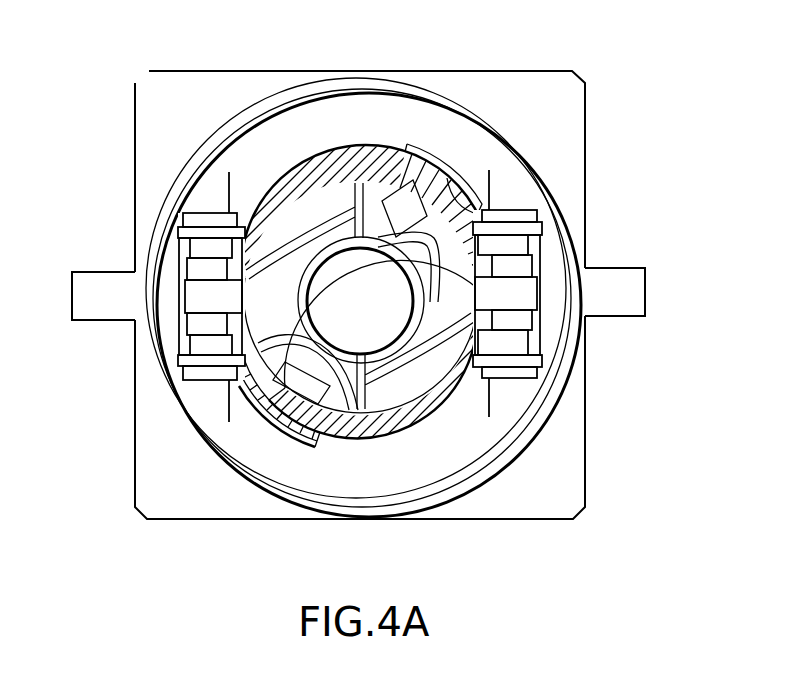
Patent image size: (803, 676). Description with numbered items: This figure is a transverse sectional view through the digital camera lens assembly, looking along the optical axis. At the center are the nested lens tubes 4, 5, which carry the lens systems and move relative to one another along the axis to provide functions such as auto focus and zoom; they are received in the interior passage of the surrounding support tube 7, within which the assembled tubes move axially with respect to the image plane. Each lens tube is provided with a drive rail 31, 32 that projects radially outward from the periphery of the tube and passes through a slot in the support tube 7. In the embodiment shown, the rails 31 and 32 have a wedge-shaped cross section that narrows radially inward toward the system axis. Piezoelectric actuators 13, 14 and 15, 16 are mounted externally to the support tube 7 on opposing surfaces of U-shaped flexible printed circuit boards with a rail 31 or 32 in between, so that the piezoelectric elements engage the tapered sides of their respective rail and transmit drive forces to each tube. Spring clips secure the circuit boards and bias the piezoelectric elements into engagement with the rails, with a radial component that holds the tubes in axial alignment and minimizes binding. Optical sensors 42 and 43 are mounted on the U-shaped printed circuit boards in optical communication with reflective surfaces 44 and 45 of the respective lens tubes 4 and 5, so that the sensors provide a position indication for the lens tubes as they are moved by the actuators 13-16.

The lens tube 4 is at (297, 215).
The lens tube 5 is at (413, 377).
The support tube 7 is at (320, 165).
The piezoelectric actuator 13 is at (517, 238).
The piezoelectric actuator 14 is at (523, 333).
The piezoelectric actuator 15 is at (198, 257).
The piezoelectric actuator 16 is at (210, 328).
The drive rail 31 is at (525, 283).
The drive rail 32 is at (197, 305).
The optical sensor 42 is at (310, 447).
The optical sensor 43 is at (432, 148).
The reflective surface 44 is at (267, 422).
The reflective surface 45 is at (407, 195).